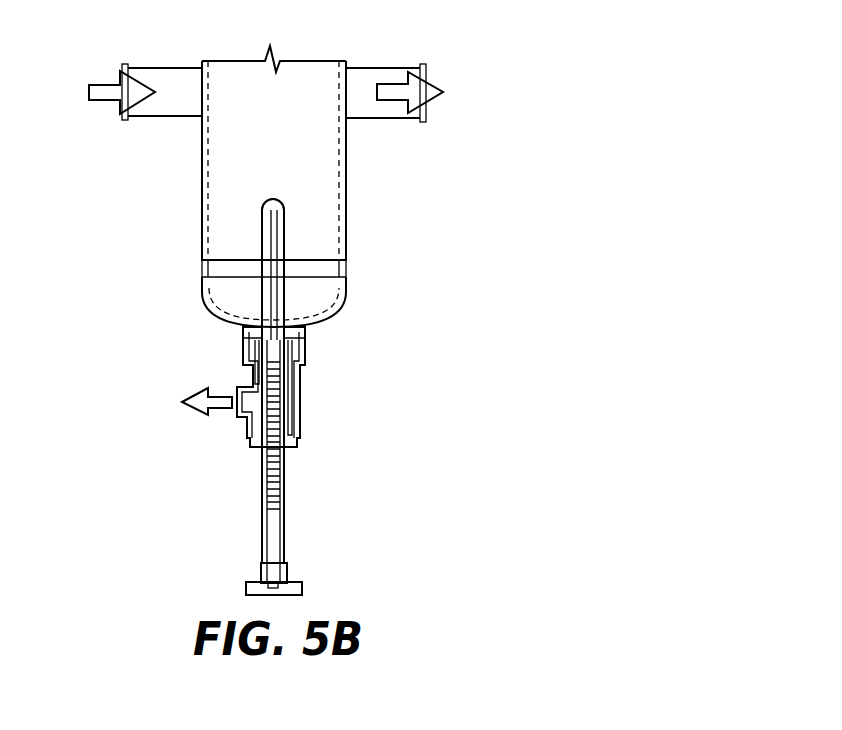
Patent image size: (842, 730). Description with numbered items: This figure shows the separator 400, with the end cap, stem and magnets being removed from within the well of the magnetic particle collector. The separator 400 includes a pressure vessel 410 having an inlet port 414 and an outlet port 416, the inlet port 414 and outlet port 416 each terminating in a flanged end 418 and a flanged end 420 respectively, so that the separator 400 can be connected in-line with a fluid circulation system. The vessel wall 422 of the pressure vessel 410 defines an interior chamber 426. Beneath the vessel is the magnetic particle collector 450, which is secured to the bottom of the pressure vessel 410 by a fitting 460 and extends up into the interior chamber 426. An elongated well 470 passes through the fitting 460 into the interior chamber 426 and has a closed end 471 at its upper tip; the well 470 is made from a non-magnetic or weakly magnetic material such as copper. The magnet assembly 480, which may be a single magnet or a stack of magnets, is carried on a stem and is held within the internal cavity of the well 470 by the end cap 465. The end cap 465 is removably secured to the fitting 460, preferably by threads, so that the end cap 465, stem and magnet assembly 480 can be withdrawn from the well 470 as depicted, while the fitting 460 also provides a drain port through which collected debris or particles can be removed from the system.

The separator 400 is at (530, 57).
The pressure vessel 410 is at (346, 197).
The inlet port 414 is at (200, 113).
The outlet port 416 is at (347, 112).
The flanged end 418 is at (120, 118).
The flanged end 420 is at (430, 116).
The vessel wall 422 is at (341, 229).
The interior chamber 426 is at (249, 190).
The magnetic particle collector 450 is at (306, 343).
The fitting 460 is at (299, 402).
The end cap 465 is at (302, 586).
The well 470 is at (260, 247).
The closed end 471 is at (276, 197).
The magnet assembly 480 is at (268, 475).